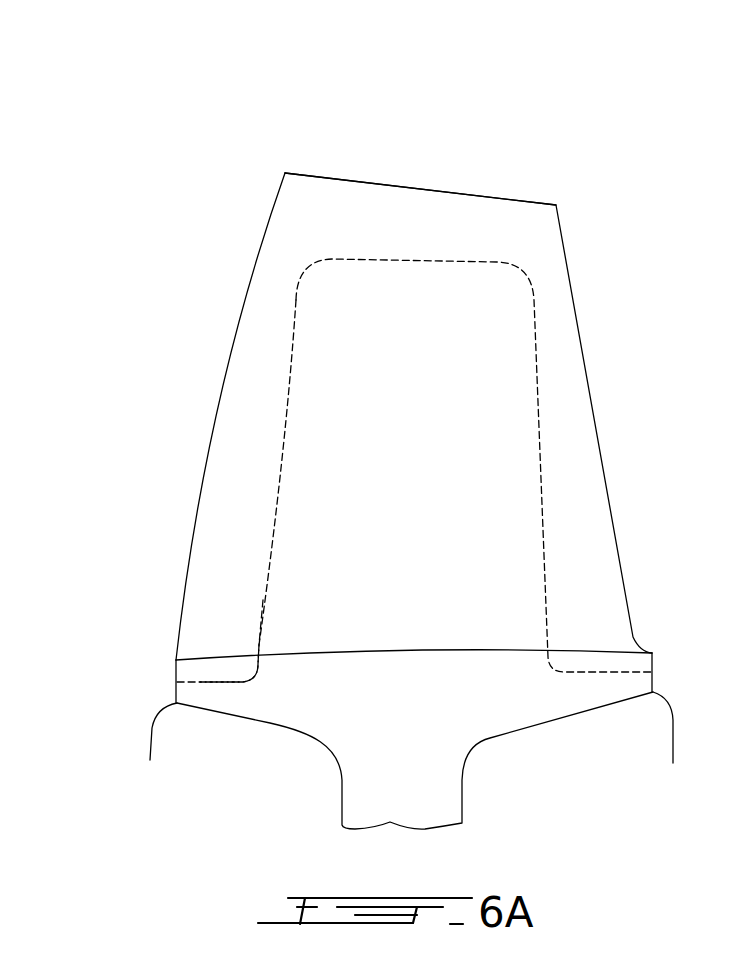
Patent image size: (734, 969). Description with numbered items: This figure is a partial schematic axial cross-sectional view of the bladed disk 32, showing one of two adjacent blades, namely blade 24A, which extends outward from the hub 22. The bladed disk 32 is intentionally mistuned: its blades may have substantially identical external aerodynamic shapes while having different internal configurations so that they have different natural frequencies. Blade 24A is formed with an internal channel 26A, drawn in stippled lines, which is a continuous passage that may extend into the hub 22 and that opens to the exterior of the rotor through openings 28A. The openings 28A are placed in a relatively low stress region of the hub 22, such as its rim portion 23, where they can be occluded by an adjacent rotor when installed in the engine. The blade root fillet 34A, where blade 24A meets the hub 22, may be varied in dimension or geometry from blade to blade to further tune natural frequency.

The bladed disk 32 is at (253, 158).
The blade 24A is at (487, 196).
The internal channel 26A is at (277, 415).
The blade root fillet 34A is at (226, 655).
The opening 28A is at (176, 682).
The rim portion 23 is at (408, 744).
The hub 22 is at (415, 742).